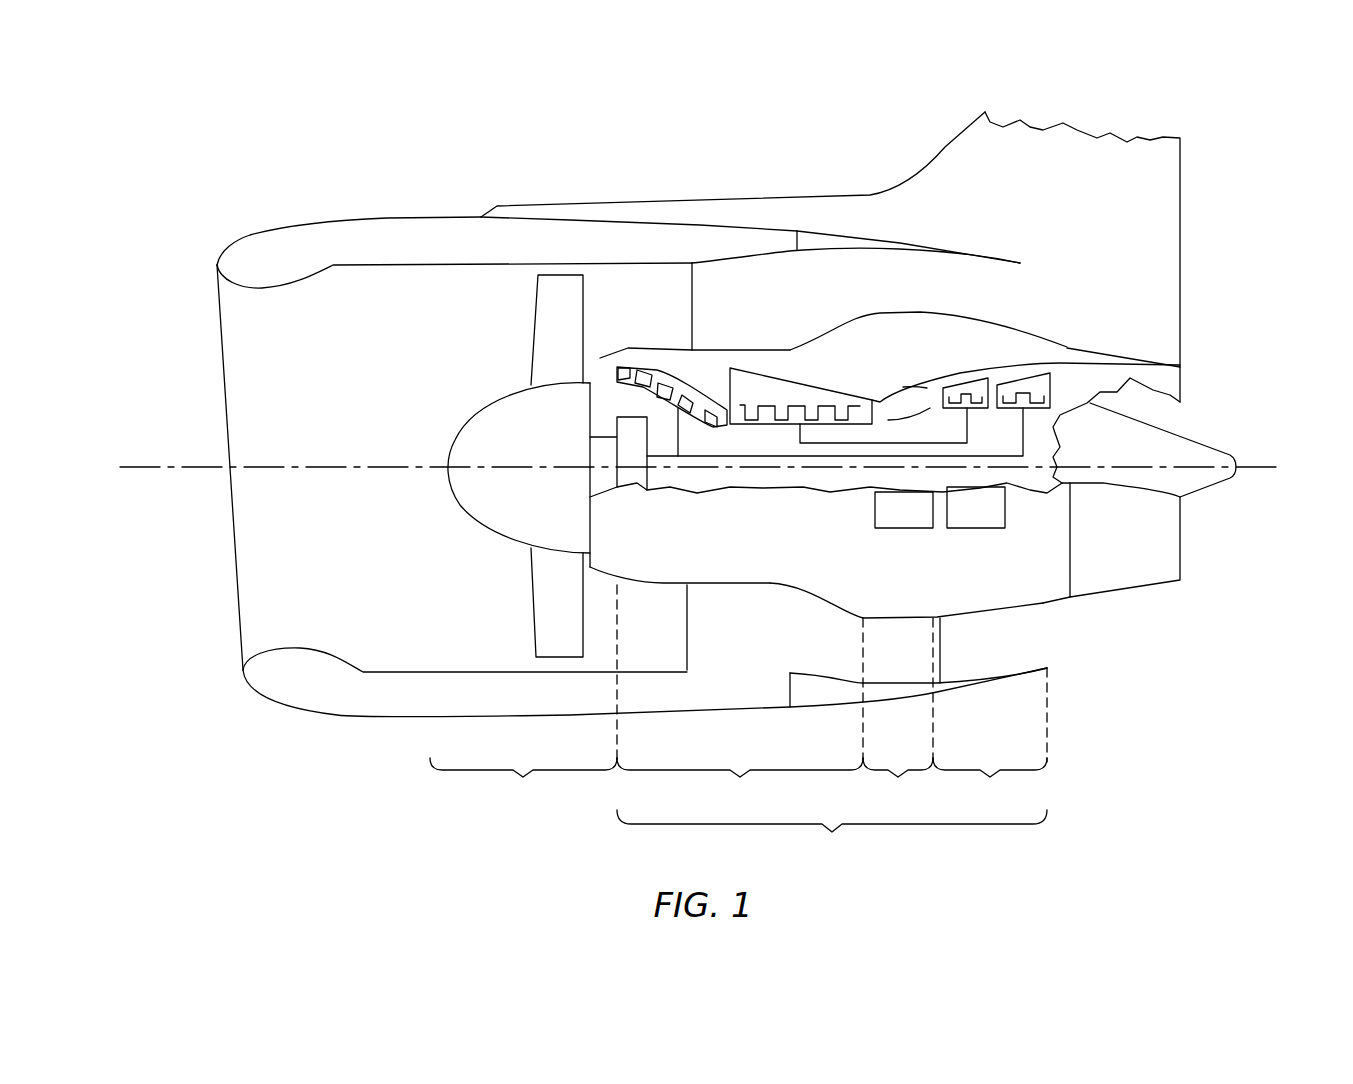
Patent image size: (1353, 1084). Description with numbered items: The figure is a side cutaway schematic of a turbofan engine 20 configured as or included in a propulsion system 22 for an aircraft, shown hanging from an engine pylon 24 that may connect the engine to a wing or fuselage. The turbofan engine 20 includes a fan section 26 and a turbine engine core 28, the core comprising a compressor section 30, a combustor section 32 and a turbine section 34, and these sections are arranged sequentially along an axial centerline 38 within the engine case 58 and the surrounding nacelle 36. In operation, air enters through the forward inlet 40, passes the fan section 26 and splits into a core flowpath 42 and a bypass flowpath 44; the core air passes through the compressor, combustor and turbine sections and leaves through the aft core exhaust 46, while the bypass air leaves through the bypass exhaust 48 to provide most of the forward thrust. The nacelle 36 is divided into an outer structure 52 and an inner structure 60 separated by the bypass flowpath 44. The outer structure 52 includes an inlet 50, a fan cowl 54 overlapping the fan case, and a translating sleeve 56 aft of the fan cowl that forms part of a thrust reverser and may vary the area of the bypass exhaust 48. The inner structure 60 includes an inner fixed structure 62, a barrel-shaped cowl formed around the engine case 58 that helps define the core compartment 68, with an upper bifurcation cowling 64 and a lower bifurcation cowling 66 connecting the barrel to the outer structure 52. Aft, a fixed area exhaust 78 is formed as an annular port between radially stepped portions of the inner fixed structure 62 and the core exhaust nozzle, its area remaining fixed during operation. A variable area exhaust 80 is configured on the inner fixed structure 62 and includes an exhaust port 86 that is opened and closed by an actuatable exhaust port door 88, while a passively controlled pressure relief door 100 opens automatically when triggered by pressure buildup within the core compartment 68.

The turbofan engine 20 is at (297, 181).
The propulsion system 22 is at (213, 150).
The engine pylon 24 is at (1182, 181).
The fan section 26 is at (523, 784).
The turbine engine core 28 is at (832, 837).
The compressor section 30 is at (740, 697).
The combustor section 32 is at (901, 714).
The turbine section 34 is at (990, 739).
The nacelle 36 is at (338, 722).
The axial centerline 38 is at (1258, 470).
The inlet 40 is at (225, 353).
The core flowpath 42 is at (607, 373).
The bypass flowpath 44 is at (618, 309).
The core exhaust 46 is at (1182, 383).
The bypass exhaust 48 is at (1017, 305).
The inlet 50 is at (407, 263).
The outer structure 52 is at (358, 218).
The fan cowl 54 is at (462, 217).
The translating sleeve 56 is at (872, 236).
The engine case 58 is at (958, 373).
The inner structure 60 is at (918, 313).
The inner fixed structure 62 is at (787, 350).
The upper bifurcation cowling 64 is at (692, 288).
The lower bifurcation cowling 66 is at (680, 657).
The core compartment 68 is at (856, 368).
The fixed area exhaust 78 is at (1085, 347).
The variable area exhaust 80 is at (967, 533).
The exhaust port 86 is at (995, 530).
The exhaust port door 88 is at (963, 520).
The pressure relief door 100 is at (884, 522).